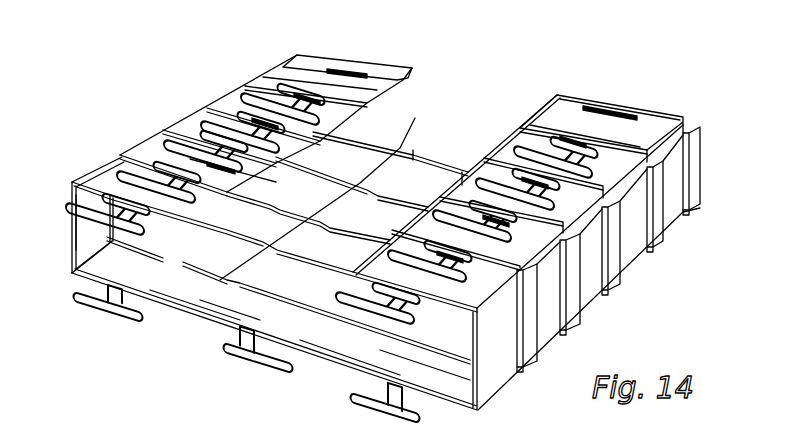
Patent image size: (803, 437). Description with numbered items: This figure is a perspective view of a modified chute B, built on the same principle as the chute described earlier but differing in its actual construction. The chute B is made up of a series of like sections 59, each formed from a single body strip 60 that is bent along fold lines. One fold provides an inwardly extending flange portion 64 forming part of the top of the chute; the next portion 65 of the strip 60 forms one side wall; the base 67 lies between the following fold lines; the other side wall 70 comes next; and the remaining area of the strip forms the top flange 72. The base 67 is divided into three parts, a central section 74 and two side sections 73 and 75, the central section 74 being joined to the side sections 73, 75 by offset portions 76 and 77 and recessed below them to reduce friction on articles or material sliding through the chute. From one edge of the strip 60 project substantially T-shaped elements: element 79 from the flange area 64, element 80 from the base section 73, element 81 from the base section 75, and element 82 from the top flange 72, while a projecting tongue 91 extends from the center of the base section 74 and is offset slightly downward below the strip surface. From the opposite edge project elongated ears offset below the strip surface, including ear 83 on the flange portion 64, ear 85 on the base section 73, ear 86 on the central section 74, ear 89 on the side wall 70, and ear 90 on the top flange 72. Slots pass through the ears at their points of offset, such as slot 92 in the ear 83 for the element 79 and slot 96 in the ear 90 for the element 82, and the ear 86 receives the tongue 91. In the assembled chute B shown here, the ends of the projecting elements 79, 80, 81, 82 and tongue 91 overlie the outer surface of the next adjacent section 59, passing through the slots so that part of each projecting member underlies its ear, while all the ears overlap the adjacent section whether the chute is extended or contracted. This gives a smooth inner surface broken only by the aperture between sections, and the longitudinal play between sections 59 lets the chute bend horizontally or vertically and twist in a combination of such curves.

The chute B is at (97, 150).
The section 59 is at (667, 237).
The body strip 60 is at (97, 173).
The flange portion 64 is at (280, 63).
The side wall portion 65 is at (82, 233).
The base 67 is at (98, 262).
The side wall 70 is at (627, 233).
The top flange 72 is at (610, 165).
The base side section 73 is at (113, 267).
The central base section 74 is at (227, 313).
The base side section 75 is at (385, 363).
The offset portion 76 is at (197, 310).
The offset portion 77 is at (350, 363).
The projecting element 79 is at (178, 157).
The projecting element 80 is at (100, 307).
The projecting element 81 is at (378, 403).
The projecting element 82 is at (520, 150).
The ear 83 is at (210, 102).
The ear 85 is at (380, 150).
The ear 86 is at (437, 165).
The ear 89 is at (695, 176).
The ear 90 is at (607, 107).
The projecting tongue 91 is at (247, 357).
The slot 92 is at (347, 67).
The slot 96 is at (552, 137).